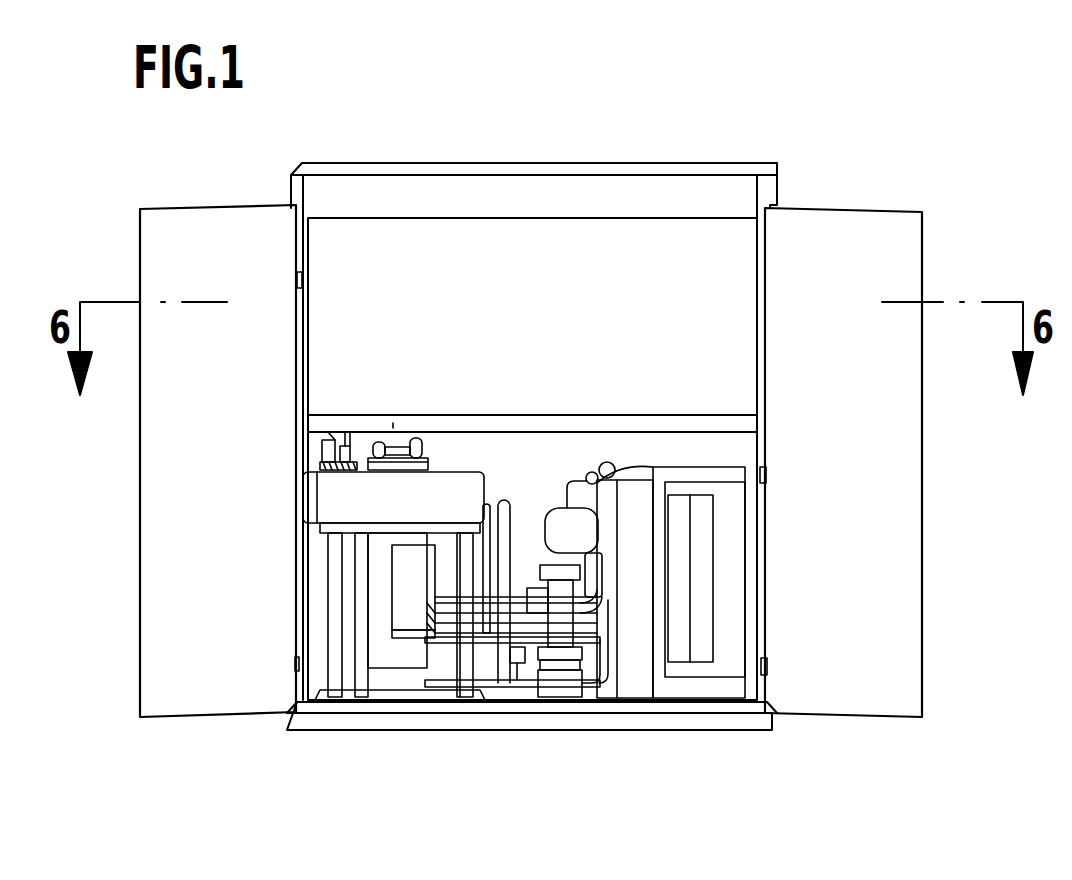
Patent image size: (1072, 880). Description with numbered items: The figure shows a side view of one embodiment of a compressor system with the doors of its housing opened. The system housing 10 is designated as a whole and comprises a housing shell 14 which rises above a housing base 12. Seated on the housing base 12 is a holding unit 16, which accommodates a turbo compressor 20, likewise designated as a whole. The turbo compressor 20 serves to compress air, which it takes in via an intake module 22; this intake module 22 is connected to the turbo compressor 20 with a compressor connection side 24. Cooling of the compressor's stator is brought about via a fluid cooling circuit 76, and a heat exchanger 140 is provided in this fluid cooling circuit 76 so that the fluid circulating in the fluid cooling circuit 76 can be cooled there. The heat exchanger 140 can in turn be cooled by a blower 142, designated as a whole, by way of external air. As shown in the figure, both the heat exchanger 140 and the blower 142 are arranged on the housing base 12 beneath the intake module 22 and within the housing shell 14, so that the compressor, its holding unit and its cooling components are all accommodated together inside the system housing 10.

The system housing 10 is at (662, 118).
The housing base 12 is at (618, 717).
The housing shell 14 is at (778, 181).
The holding unit 16 is at (463, 478).
The turbo compressor 20 is at (420, 705).
The intake module 22 is at (675, 278).
The compressor connection side 24 is at (393, 430).
The fluid cooling circuit 76 is at (510, 693).
The heat exchanger 140 is at (700, 647).
The blower 142 is at (634, 627).